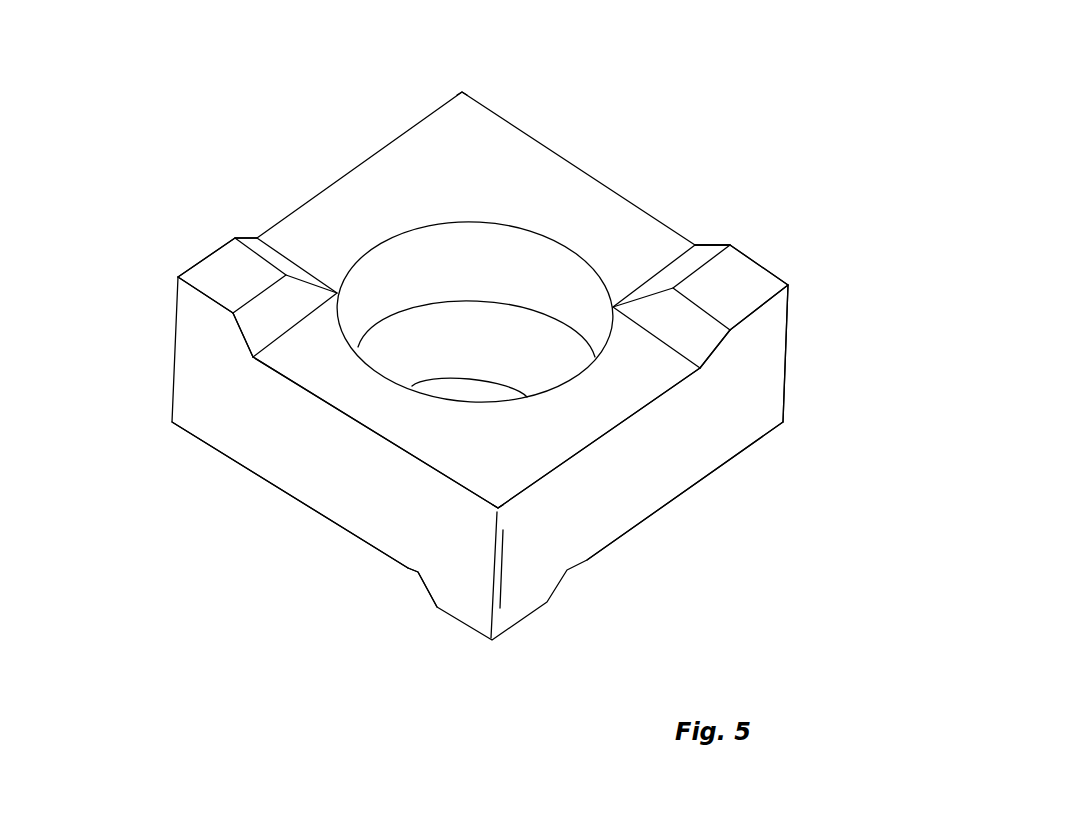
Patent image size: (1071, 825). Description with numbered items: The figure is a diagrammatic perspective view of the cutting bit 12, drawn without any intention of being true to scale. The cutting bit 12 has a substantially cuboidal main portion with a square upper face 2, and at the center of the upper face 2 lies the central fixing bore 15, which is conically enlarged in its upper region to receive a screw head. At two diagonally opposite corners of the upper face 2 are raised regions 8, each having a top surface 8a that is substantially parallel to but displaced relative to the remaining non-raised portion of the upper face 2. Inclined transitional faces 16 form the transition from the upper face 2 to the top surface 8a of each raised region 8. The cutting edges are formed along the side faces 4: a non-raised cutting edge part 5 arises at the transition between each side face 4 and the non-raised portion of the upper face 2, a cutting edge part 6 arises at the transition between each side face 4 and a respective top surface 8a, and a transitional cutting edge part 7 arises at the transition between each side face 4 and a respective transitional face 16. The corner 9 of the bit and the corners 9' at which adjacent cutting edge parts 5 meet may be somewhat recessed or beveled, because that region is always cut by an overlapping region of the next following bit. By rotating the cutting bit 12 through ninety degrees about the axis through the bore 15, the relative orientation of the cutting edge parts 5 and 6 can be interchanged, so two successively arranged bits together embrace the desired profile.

The upper face 2 is at (492, 148).
The side face 4 is at (290, 450).
The non-raised cutting edge part 5 is at (285, 378).
The non-raised cutting edge part 6 is at (200, 260).
The transitional cutting edge part 7 is at (237, 338).
The raised region 8 is at (222, 268).
The top surface of the raised region 8a is at (228, 293).
The corner 9 is at (825, 306).
The corner 9' is at (518, 326).
The cutting bit 12 is at (588, 112).
The central fixing bore 15 is at (483, 327).
The inclined transitional face 16 is at (691, 265).